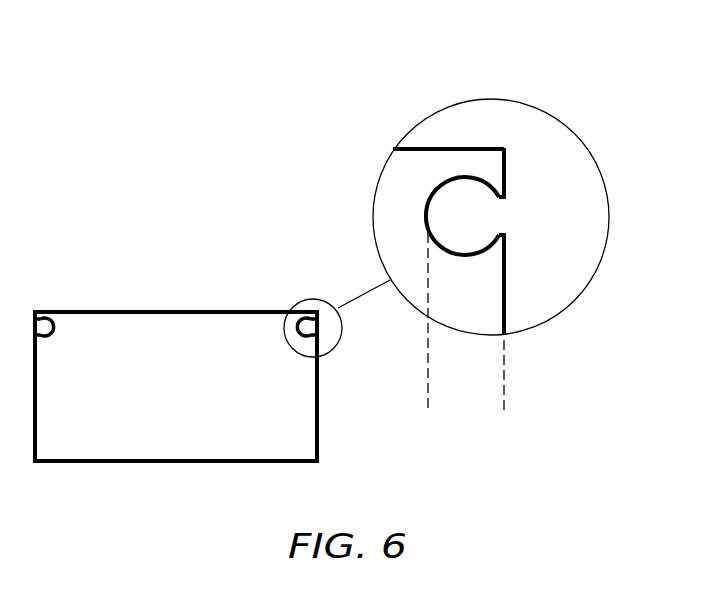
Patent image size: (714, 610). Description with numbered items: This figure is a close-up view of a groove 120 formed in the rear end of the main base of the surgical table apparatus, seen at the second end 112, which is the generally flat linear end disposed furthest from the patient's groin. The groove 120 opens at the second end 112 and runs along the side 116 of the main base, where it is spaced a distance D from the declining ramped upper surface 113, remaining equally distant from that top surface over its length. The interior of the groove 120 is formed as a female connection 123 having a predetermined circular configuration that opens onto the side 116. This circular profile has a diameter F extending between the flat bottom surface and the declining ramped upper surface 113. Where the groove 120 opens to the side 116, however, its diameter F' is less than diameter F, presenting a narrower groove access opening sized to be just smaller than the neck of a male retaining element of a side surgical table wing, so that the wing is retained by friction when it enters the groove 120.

The second end 112 is at (200, 401).
The declining ramped upper surface 113 is at (444, 148).
The side 116 is at (504, 306).
The groove 120 is at (428, 205).
The female connection 123 is at (487, 250).
The distance D is at (505, 170).
The diameter F is at (468, 216).
The diameter F' is at (466, 321).